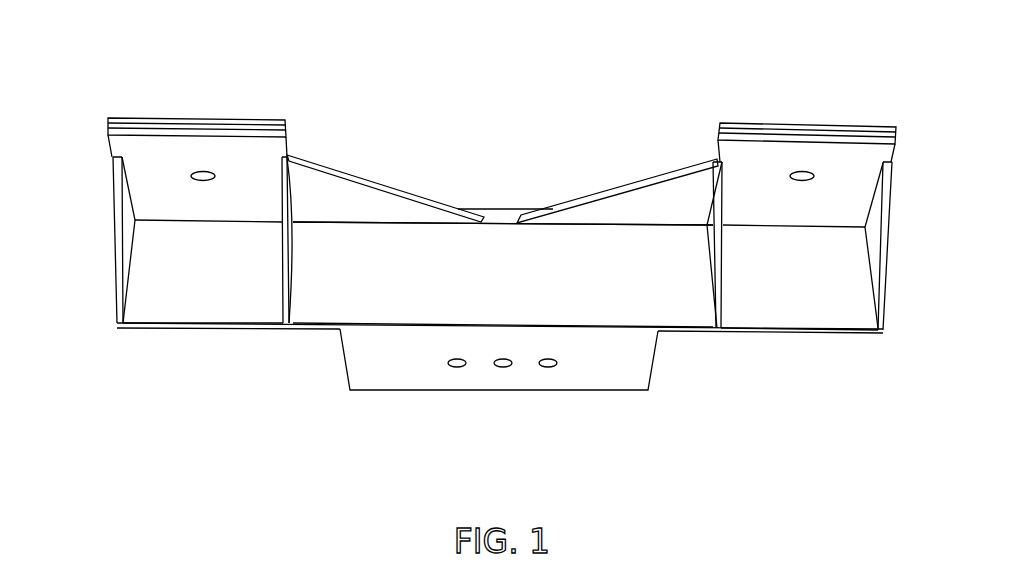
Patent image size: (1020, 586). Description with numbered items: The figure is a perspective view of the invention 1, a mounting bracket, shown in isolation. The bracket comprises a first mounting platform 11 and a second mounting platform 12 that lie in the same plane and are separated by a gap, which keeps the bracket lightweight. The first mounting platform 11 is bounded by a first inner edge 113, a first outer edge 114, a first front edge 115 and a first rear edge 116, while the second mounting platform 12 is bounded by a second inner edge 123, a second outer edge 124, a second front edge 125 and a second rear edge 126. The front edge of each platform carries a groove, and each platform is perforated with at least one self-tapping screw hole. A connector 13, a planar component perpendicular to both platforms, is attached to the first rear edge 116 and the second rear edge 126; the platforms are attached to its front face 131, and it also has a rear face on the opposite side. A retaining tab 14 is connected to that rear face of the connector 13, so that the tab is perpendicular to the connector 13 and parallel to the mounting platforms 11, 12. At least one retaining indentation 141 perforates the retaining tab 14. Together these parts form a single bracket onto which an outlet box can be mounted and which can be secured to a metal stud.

The mounting bracket 1 is at (578, 66).
The first mounting platform 11 is at (299, 107).
The second mounting platform 12 is at (710, 115).
The connector 13 is at (327, 293).
The retaining tab 14 is at (405, 378).
The first inner edge 113 is at (288, 138).
The first outer edge 114 is at (107, 137).
The first front edge 115 is at (127, 117).
The first rear edge 116 is at (247, 222).
The second inner edge 123 is at (716, 144).
The second outer edge 124 is at (897, 152).
The second front edge 125 is at (768, 123).
The second rear edge 126 is at (752, 227).
The front face 131 is at (620, 273).
The retaining indentation 141 is at (457, 367).